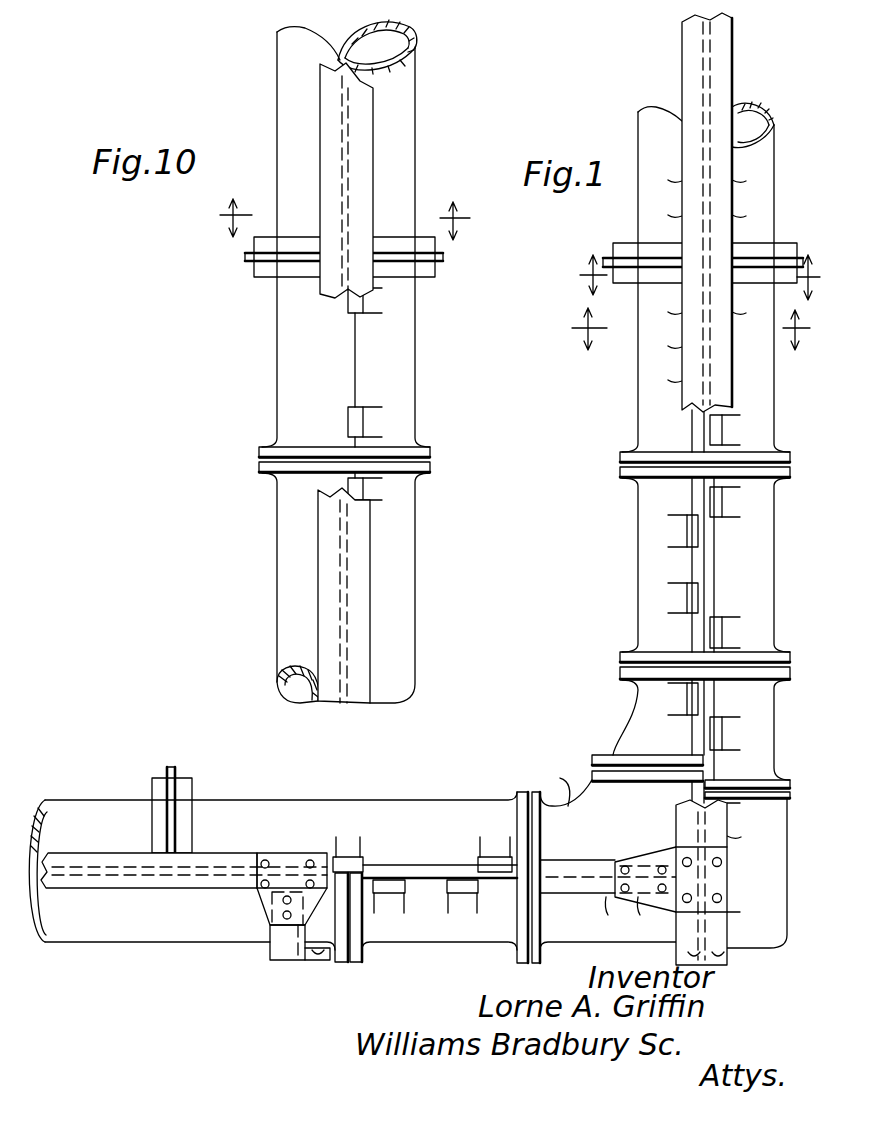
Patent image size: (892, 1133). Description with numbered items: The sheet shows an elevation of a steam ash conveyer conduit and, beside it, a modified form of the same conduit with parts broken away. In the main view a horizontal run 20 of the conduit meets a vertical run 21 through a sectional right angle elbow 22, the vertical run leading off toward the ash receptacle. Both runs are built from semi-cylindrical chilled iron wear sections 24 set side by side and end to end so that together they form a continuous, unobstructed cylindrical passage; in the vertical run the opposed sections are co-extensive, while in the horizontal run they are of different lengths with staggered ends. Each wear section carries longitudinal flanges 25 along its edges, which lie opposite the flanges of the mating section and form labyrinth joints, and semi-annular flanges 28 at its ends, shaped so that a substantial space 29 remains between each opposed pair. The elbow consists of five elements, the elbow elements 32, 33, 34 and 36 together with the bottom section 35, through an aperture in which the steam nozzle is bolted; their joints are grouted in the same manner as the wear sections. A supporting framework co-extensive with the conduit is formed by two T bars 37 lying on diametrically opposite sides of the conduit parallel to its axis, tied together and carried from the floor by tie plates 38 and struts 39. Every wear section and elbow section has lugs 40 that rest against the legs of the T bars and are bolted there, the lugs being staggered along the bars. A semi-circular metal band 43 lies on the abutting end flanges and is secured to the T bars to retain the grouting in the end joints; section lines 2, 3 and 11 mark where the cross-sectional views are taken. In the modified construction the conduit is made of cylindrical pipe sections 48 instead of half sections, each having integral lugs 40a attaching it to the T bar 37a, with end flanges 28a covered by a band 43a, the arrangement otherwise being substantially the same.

In FIG. 1, the horizontal run 20 is at (356, 805).
In FIG. 1, the vertical run 21 is at (646, 505).
In FIG. 1, the sectional right angle elbow 22 is at (600, 808).
In FIG. 1, the semi-cylindrical chilled iron wear section 24 is at (762, 193).
In FIG. 1, the flange 25 is at (700, 429).
In FIG. 1, the semi-annular flange 28 is at (782, 478).
In FIG. 1, the space 29 is at (790, 674).
In FIG. 1, the elbow element 32 is at (646, 715).
In FIG. 1, the elbow element 33 is at (756, 752).
In FIG. 1, the elbow element 34 is at (549, 785).
In FIG. 1, the bottom section of the elbow 35 is at (608, 893).
In FIG. 1, the elbow element 36 is at (729, 882).
In FIG. 1, the T bar 37 is at (730, 84).
In FIG. 1, the tie plate 38 is at (300, 865).
In FIG. 1, the strut 39 is at (270, 953).
In FIG. 1, the lug 40 is at (724, 436).
In FIG. 1, the semi-circular metal band 43 is at (771, 251).
In FIG. 1, the section line 2- 2 is at (684, 331).
In FIG. 1, the section line 3- 3 is at (697, 280).
In FIG. 10, the section line 11- 11 is at (351, 219).
In FIG. 10, the end flange 28a is at (434, 482).
In FIG. 10, the T bar 37a is at (367, 128).
In FIG. 10, the integral lug 40a is at (382, 222).
In FIG. 10, the metal band 43a is at (432, 274).
In FIG. 10, the cylindrical pipe section 48 is at (405, 166).